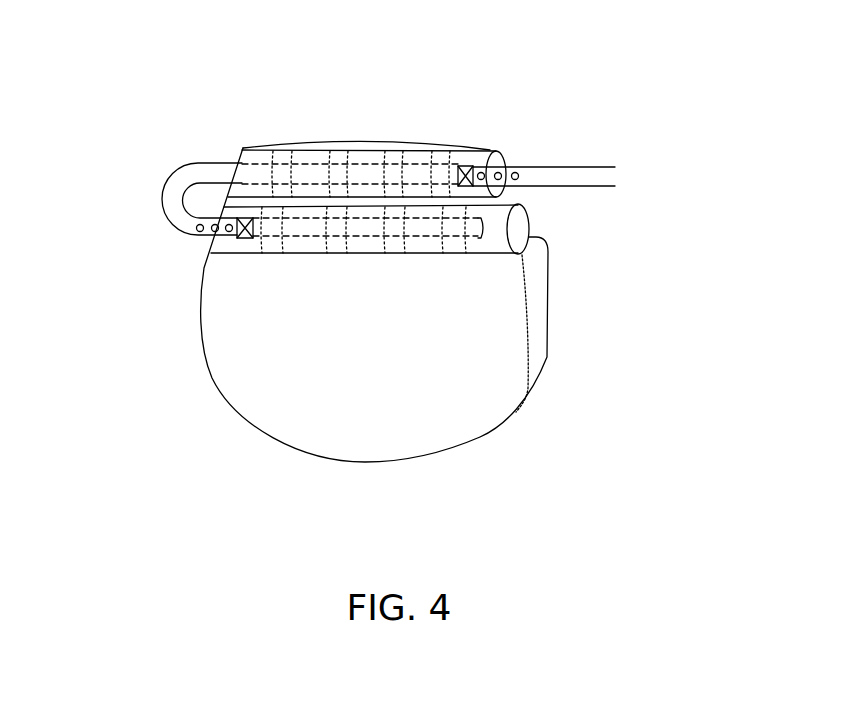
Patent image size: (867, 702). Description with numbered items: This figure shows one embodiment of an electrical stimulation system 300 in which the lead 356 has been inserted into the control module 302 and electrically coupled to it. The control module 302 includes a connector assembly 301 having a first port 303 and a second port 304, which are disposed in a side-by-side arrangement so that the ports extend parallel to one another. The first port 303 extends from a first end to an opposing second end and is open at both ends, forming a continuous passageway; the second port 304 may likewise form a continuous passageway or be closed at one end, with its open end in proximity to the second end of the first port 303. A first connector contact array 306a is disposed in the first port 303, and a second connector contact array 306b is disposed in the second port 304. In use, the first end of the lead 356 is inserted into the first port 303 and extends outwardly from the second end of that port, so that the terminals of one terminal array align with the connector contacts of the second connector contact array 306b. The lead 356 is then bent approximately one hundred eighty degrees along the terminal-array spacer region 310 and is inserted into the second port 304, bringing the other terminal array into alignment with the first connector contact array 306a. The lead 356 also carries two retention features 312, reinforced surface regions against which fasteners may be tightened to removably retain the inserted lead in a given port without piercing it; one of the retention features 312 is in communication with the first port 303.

The electrical stimulation system 300 is at (512, 44).
The connector assembly 301 is at (233, 119).
The control module 302 is at (535, 385).
The first port 303 is at (493, 160).
The second port 304 is at (521, 232).
The first connector contact array 306a is at (478, 135).
The second connector contact array 306b is at (470, 262).
The terminal-array spacer region 310 is at (170, 200).
The retention feature 312 is at (467, 170).
The lead 356 is at (588, 172).